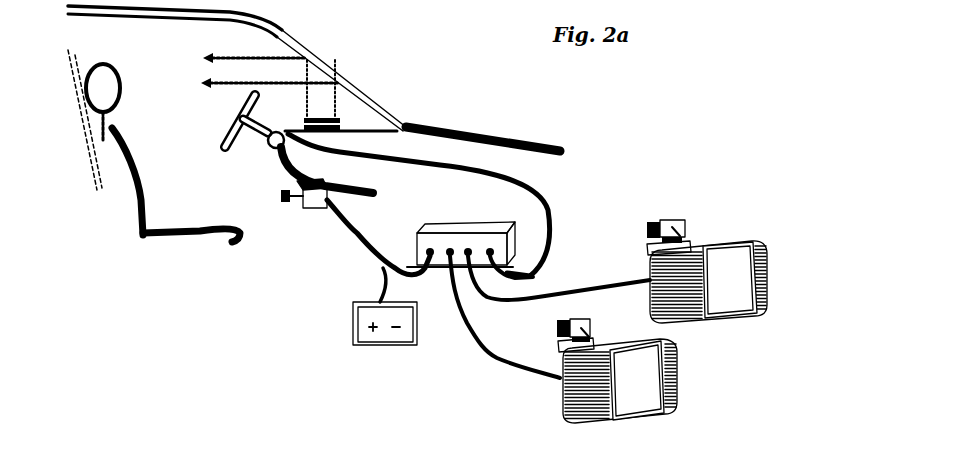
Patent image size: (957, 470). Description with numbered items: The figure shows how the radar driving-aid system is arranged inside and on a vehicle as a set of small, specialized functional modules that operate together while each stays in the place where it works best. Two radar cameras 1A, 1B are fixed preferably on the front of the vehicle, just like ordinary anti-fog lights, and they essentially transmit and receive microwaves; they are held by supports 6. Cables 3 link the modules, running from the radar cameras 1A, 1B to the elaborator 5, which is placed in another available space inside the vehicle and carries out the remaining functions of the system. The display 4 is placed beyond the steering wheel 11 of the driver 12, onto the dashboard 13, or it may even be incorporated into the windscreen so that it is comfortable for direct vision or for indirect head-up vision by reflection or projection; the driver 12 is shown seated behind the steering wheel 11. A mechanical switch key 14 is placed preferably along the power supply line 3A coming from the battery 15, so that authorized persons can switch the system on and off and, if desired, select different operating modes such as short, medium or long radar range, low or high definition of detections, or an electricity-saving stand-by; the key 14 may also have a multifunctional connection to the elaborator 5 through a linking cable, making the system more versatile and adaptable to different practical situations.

The radar camera 1A is at (727, 318).
The radar camera 1B is at (677, 383).
The cables 3 is at (533, 300).
The power supply line 3A is at (378, 268).
The display 4 is at (343, 120).
The elaborator 5 is at (513, 230).
The supports 6 is at (507, 263).
The steering wheel 11 is at (236, 118).
The driver 12 is at (135, 207).
The dashboard 13 is at (362, 128).
The mechanical switch key 14 is at (291, 205).
The battery 15 is at (367, 346).